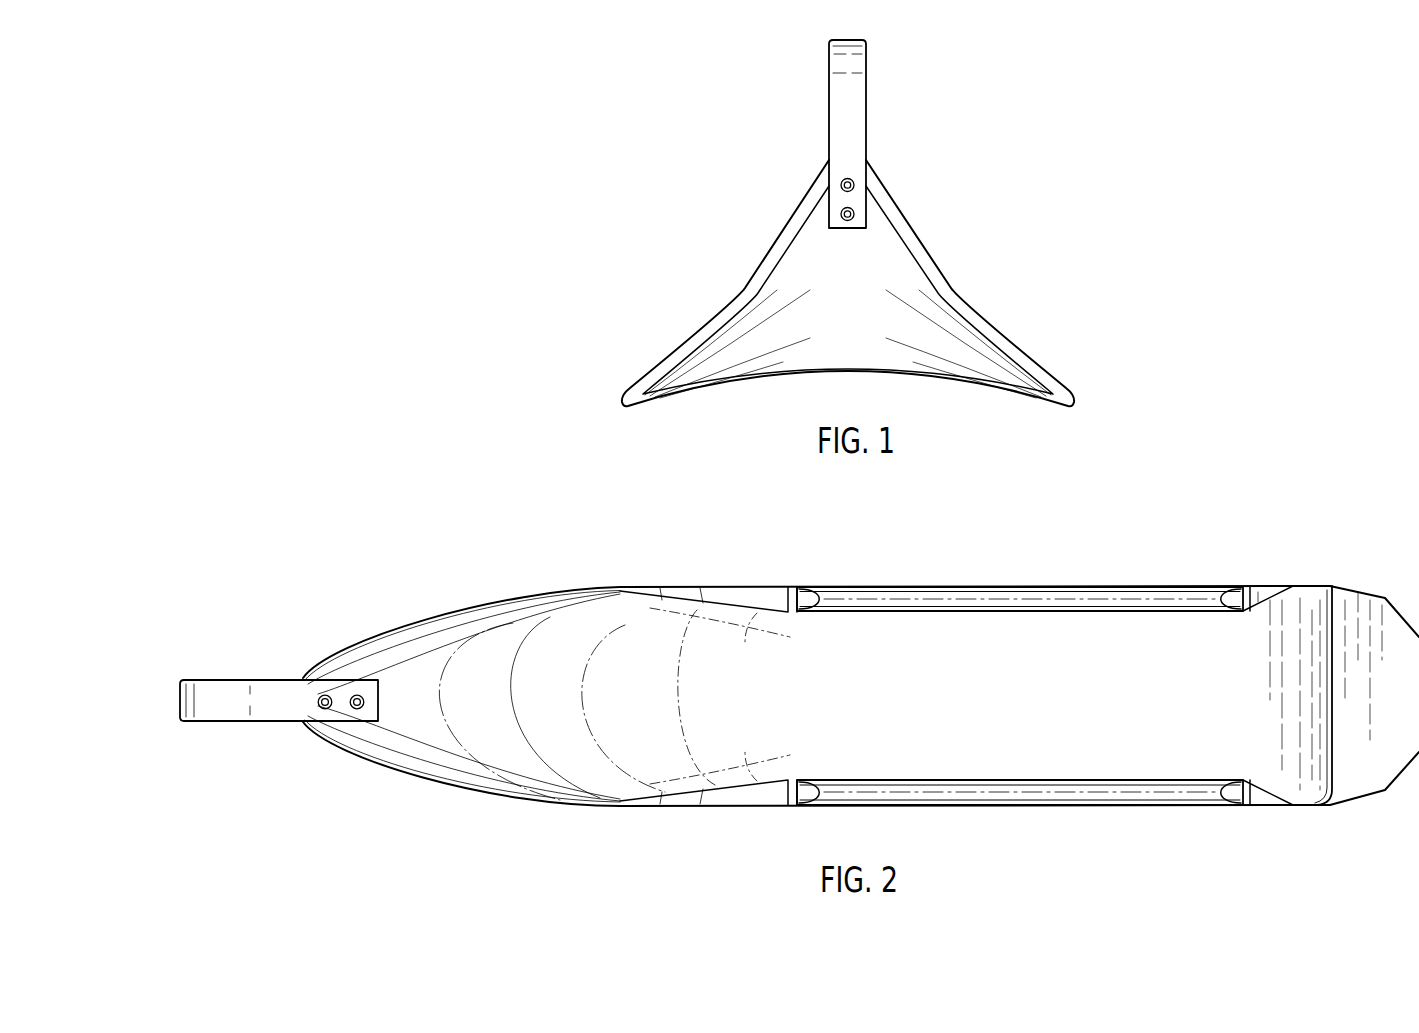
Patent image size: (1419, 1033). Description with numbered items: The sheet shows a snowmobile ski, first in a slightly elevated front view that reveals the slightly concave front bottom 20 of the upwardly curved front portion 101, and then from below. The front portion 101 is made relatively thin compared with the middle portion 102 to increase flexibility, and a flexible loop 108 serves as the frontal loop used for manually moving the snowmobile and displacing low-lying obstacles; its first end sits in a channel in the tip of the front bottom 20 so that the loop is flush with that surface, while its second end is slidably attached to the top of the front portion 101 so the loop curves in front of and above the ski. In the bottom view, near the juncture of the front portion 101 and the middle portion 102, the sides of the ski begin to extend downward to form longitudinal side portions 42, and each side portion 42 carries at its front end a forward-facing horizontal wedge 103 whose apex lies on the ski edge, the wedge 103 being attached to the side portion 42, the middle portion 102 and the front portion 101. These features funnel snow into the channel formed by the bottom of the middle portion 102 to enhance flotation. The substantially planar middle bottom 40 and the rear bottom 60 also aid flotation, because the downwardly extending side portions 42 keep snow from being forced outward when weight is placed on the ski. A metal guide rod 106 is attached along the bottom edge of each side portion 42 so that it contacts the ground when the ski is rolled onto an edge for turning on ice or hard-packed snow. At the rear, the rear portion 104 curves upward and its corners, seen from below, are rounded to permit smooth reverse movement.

In FIG. 1, the front portion 101 is at (848, 233).
In FIG. 2, the front portion 101 is at (799, 673).
In FIG. 1, the flexible loop 108 is at (856, 105).
In FIG. 1, the front bottom 20 is at (902, 362).
In FIG. 2, the front bottom 20 is at (270, 712).
In FIG. 2, the middle portion 102 is at (861, 673).
In FIG. 2, the forward-facing horizontal wedge 103 is at (774, 592).
In FIG. 2, the middle bottom 40 is at (1020, 694).
In FIG. 2, the guide rod 106 is at (977, 597).
In FIG. 2, the longitudinal side portion 42 is at (1132, 574).
In FIG. 2, the rear bottom 60 is at (1260, 585).
In FIG. 2, the rear portion 104 is at (1347, 560).